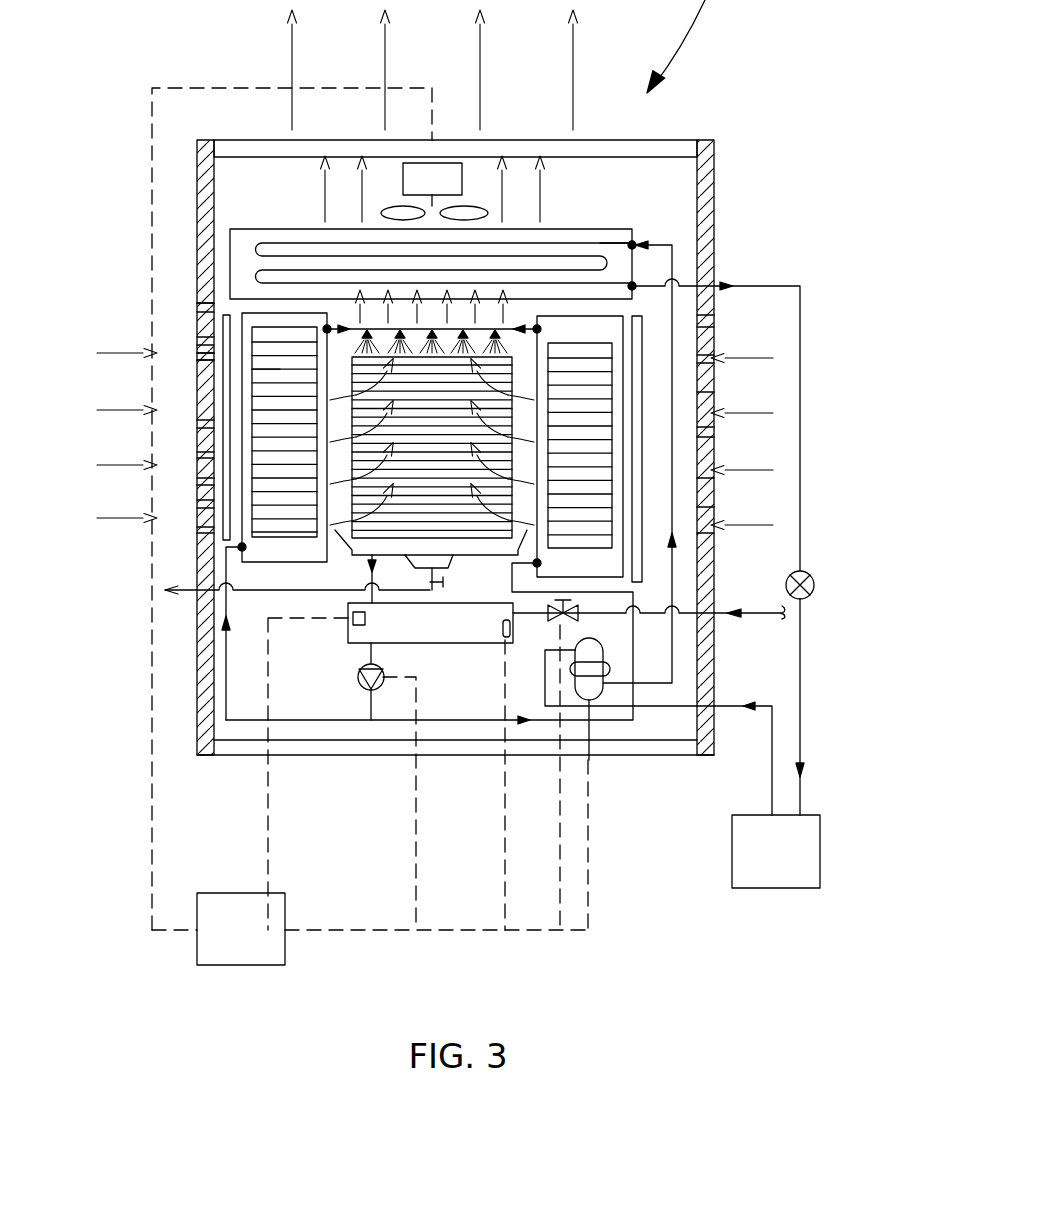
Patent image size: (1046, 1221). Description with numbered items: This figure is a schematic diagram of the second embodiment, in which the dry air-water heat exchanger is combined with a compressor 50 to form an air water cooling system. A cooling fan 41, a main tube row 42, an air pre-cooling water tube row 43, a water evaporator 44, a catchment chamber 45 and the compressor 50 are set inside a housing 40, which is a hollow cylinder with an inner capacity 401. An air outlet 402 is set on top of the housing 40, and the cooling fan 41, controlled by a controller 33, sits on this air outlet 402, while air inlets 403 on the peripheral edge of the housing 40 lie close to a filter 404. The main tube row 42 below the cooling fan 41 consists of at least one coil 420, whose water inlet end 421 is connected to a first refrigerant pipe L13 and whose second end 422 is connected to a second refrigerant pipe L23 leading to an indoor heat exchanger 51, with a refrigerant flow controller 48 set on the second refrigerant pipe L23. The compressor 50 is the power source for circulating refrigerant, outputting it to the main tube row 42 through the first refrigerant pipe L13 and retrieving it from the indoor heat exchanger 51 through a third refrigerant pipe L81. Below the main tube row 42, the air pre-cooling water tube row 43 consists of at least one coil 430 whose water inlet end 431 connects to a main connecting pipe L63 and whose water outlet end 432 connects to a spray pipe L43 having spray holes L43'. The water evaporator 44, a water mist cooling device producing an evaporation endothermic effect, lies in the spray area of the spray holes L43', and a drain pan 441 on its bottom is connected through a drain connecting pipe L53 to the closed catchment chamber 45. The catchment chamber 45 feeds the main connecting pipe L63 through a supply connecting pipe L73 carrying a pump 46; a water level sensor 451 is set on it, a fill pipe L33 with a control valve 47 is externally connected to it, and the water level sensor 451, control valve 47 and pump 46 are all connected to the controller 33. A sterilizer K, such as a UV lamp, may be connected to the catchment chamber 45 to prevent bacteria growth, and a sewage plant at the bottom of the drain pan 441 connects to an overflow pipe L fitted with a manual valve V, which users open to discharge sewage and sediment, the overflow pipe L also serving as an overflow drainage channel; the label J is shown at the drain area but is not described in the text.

The housing 40 is at (197, 243).
The inner capacity 401 is at (260, 193).
The air outlet 402 is at (362, 157).
The cooling fan 41 is at (462, 180).
The main tube row 42 is at (583, 229).
The coil 420 is at (600, 244).
The water inlet end 421 is at (640, 243).
The second end 422 is at (640, 287).
The first refrigerant pipe L13 is at (672, 260).
The second refrigerant pipe L23 is at (748, 286).
The fill pipe L33 is at (750, 613).
The third refrigerant pipe L81 is at (728, 710).
The spray pipe L43 is at (395, 215).
The spray hole L43' is at (415, 226).
The drain connecting pipe L53 is at (348, 603).
The main connecting pipe L63 is at (255, 720).
The supply connecting pipe L73 is at (365, 655).
The overflow pipe L is at (260, 592).
The air pre-cooling water tube row 43 is at (243, 420).
The coil 430 is at (260, 370).
The water inlet end 431 is at (242, 547).
The water outlet end 432 is at (213, 300).
The air inlet 403 is at (203, 357).
The filter 404 is at (213, 337).
The water evaporator 44 is at (512, 386).
The drain pan 441 is at (363, 553).
The catchment chamber 45 is at (433, 643).
The water level sensor 451 is at (500, 640).
The pump 46 is at (360, 683).
The control valve 47 is at (565, 616).
The refrigerant flow controller 48 is at (807, 571).
The compressor 50 is at (607, 656).
The indoor heat exchanger 51 is at (732, 847).
The controller 33 is at (237, 893).
The drain outlet J is at (453, 557).
The manual valve V is at (447, 582).
The sterilizer K is at (353, 626).